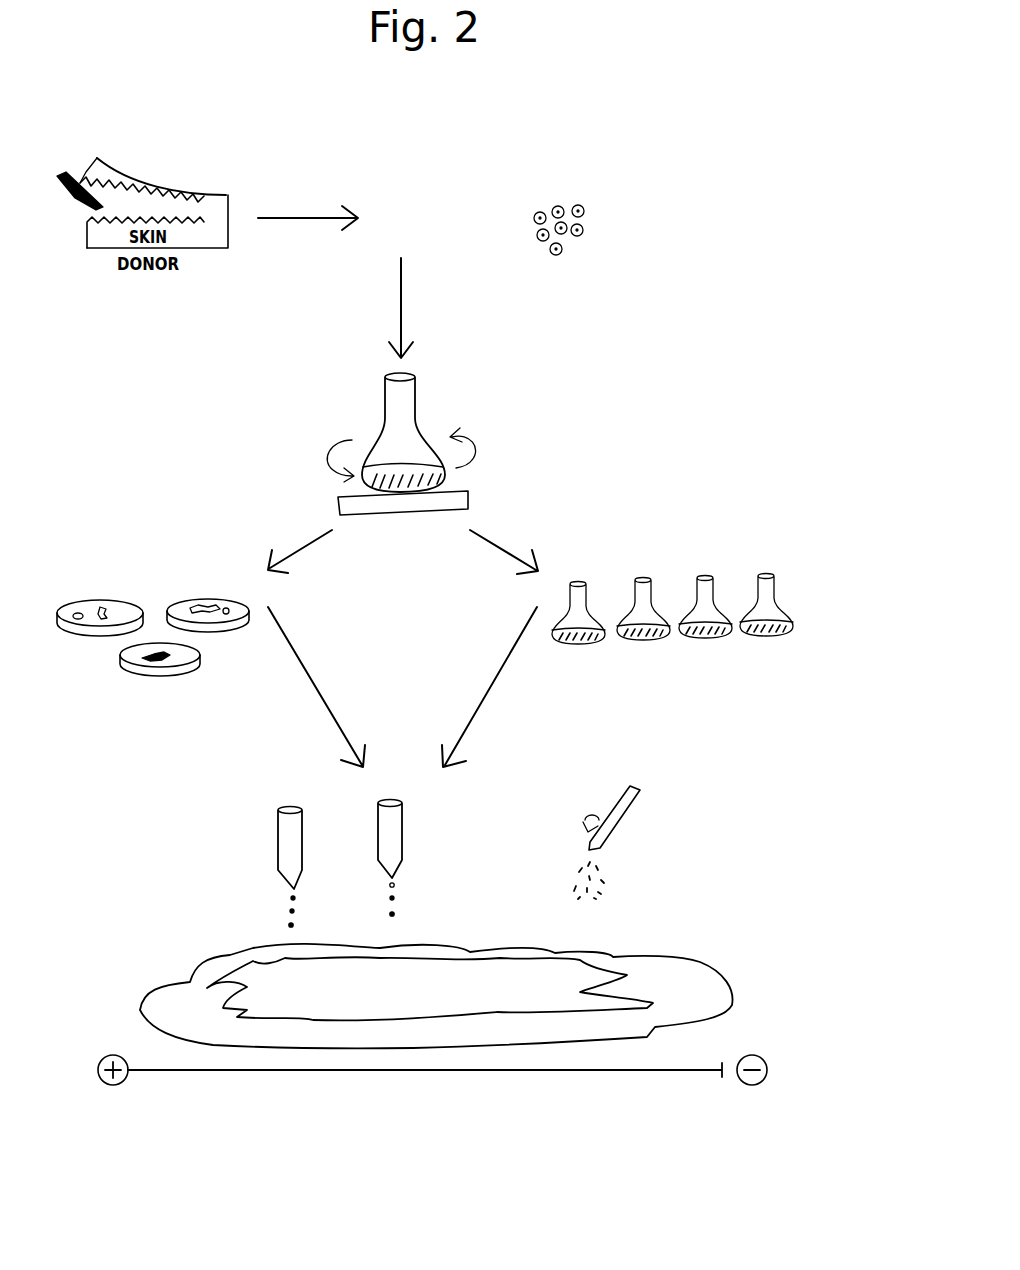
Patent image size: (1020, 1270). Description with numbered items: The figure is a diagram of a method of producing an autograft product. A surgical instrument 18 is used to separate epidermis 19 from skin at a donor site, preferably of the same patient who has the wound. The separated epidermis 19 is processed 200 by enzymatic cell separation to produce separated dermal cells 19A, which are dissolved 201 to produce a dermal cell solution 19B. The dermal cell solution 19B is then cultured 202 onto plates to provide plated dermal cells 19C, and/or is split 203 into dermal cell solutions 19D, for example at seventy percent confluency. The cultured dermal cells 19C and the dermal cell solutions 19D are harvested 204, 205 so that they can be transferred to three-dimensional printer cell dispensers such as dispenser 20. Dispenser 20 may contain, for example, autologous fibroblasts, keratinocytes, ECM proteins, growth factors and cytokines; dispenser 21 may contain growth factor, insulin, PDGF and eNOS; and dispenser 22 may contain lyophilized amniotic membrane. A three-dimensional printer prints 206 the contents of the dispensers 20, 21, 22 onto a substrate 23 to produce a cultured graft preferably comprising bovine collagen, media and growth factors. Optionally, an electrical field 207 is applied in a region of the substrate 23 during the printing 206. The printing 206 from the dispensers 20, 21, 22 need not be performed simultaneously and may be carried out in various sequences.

The surgical instrument 18 is at (65, 178).
The epidermis 19 is at (97, 158).
The separated dermal cells 19A is at (561, 252).
The dermal cell solution 19B is at (416, 444).
The plated dermal cells 19C is at (153, 655).
The dermal cell solutions 19D is at (672, 643).
The 3D printer cell dispenser 20 is at (371, 858).
The 3D printer cell dispenser 21 is at (266, 859).
The 3D printer cell dispenser 22 is at (595, 816).
The substrate 23 is at (436, 996).
The processing step 200 is at (308, 198).
The dissolving step 201 is at (372, 308).
The culturing step 202 is at (295, 540).
The splitting step 203 is at (508, 540).
The harvesting step 204 is at (311, 687).
The harvesting step 205 is at (494, 687).
The printing step 206 is at (618, 893).
The electrical field 207 is at (432, 1088).